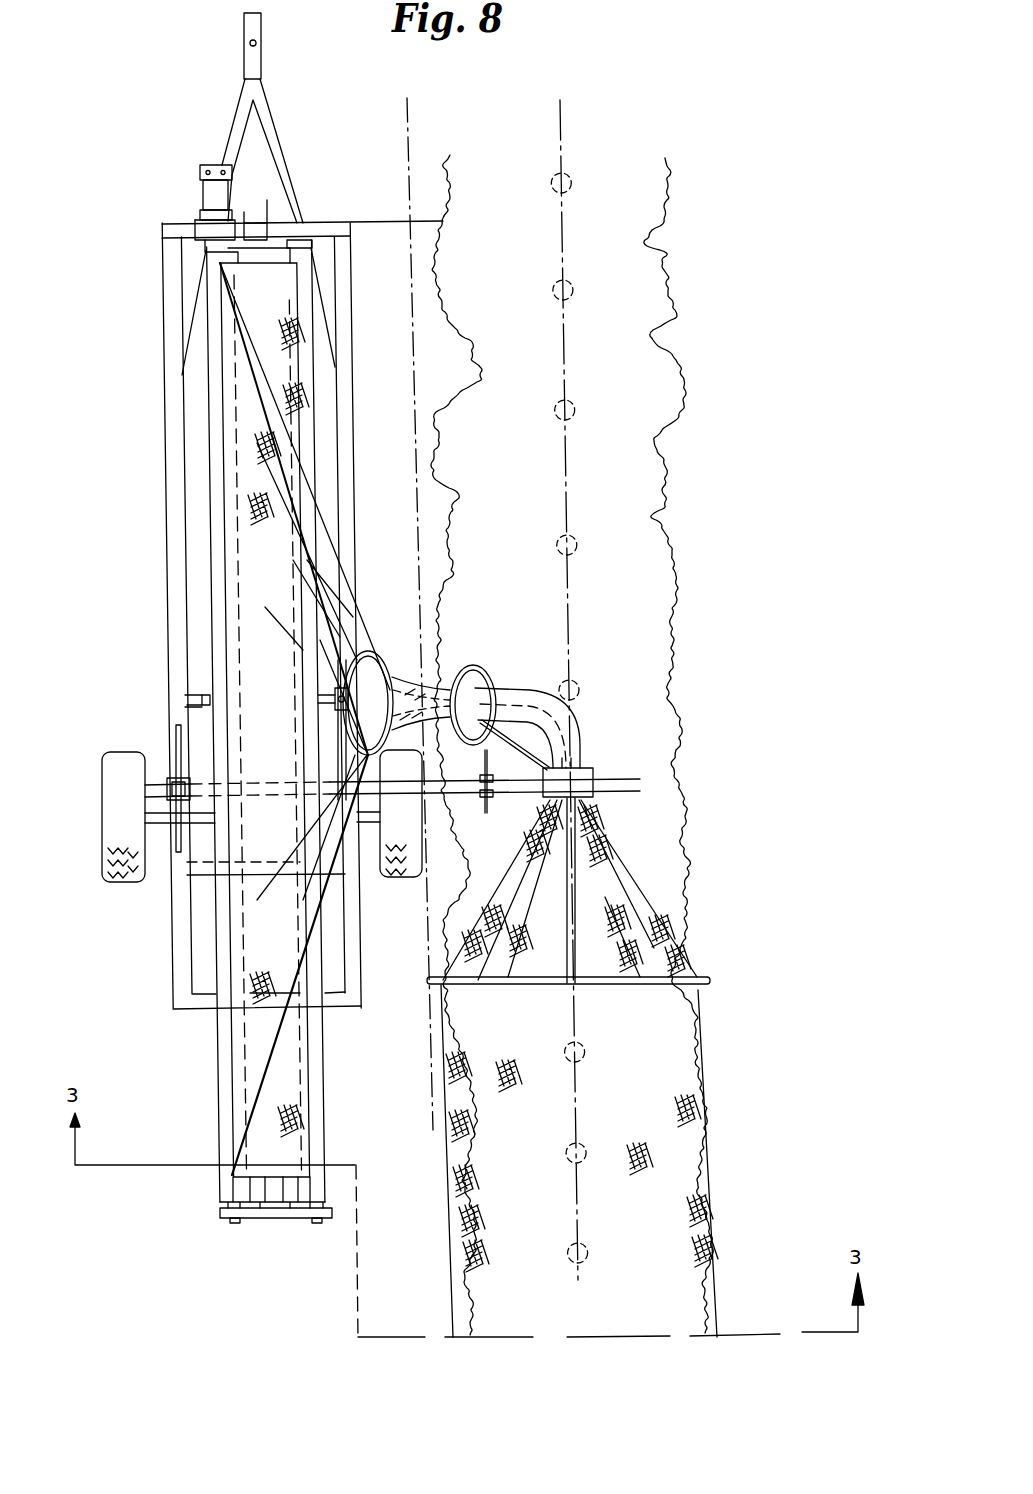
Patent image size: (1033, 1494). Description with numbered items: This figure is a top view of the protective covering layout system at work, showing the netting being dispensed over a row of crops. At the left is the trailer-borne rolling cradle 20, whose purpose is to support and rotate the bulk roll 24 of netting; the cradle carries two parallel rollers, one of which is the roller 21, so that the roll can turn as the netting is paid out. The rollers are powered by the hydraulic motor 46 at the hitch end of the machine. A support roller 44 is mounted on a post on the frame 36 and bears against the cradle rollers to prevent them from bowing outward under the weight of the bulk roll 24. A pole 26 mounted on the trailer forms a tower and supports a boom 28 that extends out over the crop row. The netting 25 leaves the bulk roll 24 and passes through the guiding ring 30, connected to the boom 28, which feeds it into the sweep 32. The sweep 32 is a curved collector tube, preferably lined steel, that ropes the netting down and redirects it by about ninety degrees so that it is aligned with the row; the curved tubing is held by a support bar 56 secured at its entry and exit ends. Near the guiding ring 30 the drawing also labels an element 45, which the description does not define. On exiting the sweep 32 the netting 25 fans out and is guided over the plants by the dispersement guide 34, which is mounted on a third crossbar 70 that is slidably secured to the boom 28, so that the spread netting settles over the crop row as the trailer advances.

The rolling cradle 20 is at (322, 1140).
The roller 21 is at (226, 1103).
The bulk roll 24 is at (262, 312).
The netting 25 is at (675, 1060).
The pole 26 is at (176, 778).
The boom 28 is at (463, 803).
The guiding ring 30 is at (384, 667).
The sweep 32 is at (580, 740).
The dispersement guide 34 is at (680, 967).
The frame 36 is at (168, 553).
The support roller 44 is at (185, 690).
The fan support 45 is at (335, 655).
The hydraulic motor 46 is at (202, 194).
The support bar 56 is at (582, 664).
The third crossbar 70 is at (578, 900).